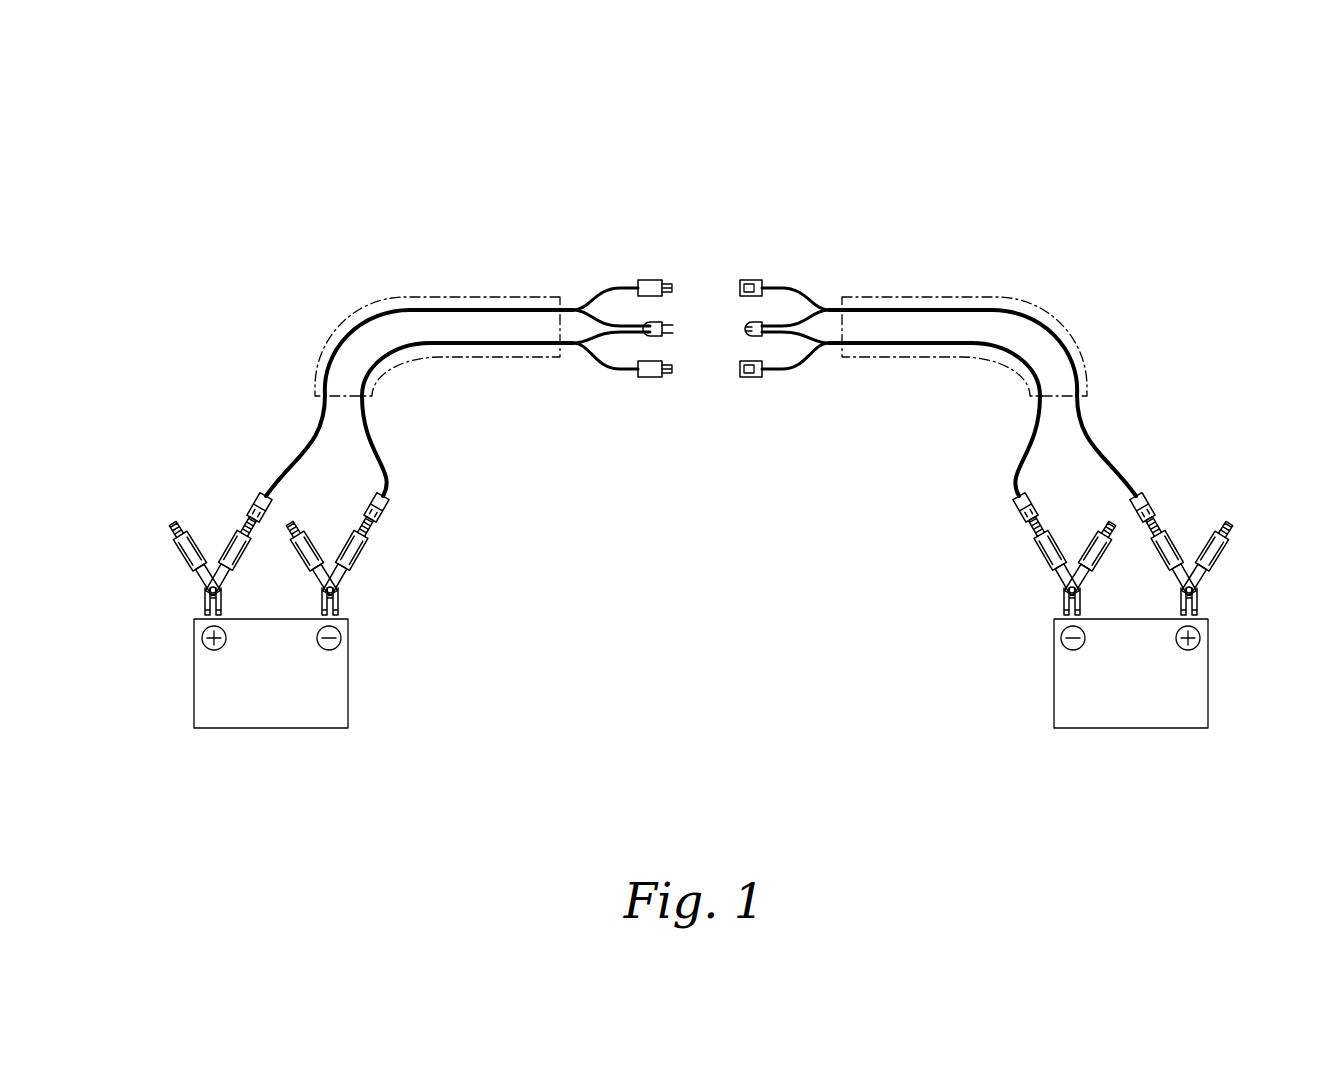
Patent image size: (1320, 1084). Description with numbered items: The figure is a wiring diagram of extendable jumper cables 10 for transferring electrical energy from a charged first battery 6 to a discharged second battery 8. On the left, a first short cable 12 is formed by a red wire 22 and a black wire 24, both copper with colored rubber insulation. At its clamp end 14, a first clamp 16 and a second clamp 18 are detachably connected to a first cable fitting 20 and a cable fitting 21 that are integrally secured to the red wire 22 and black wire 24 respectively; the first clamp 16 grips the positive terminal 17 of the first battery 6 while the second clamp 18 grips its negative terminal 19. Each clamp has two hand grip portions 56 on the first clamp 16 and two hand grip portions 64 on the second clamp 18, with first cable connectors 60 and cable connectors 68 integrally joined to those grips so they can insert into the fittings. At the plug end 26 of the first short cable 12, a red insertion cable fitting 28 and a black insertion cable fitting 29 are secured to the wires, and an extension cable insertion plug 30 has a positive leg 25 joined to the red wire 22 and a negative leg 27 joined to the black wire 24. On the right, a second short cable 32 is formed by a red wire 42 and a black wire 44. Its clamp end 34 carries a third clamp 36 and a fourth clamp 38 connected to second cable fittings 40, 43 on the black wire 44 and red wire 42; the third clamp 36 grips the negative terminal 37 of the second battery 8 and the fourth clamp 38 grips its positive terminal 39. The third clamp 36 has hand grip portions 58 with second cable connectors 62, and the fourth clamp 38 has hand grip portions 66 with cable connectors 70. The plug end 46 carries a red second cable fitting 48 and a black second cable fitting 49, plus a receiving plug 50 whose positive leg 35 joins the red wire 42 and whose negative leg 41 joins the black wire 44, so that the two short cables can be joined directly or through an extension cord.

The first battery 6 is at (273, 705).
The second battery 8 is at (1130, 700).
The extendable jumper cables 10 is at (443, 232).
The first short cable 12 is at (384, 296).
The clamp end 14 is at (248, 412).
The first clamp 16 is at (205, 596).
The positive terminal 17 is at (207, 648).
The second clamp 18 is at (345, 596).
The negative terminal 19 is at (335, 649).
The first cable fitting 20 is at (250, 500).
The cable fitting 21 is at (395, 510).
The red wire 22 is at (340, 345).
The black wire 24 is at (418, 346).
The positive leg 25 is at (600, 318).
The plug end 26 is at (635, 175).
The negative leg 27 is at (598, 340).
The red insertion cable fitting 28 is at (650, 280).
The black insertion cable fitting 29 is at (648, 378).
The extension cable insertion plug 30 is at (673, 333).
The second short cable 32 is at (1040, 297).
The clamp end 34 is at (1162, 403).
The positive leg 35 is at (805, 318).
The third clamp 36 is at (1062, 596).
The negative terminal 37 is at (1067, 650).
The fourth clamp 38 is at (1200, 596).
The positive terminal 39 is at (1195, 650).
The second cable fitting 40 is at (1010, 512).
The negative leg 41 is at (806, 340).
The red wire 42 is at (882, 309).
The second cable fitting 43 is at (1148, 500).
The black wire 44 is at (985, 347).
The plug end 46 is at (770, 175).
The red second cable fitting 48 is at (758, 279).
The black second cable fitting 49 is at (760, 378).
The receiving plug 50 is at (746, 322).
The hand grip portions 56 is at (200, 575).
The hand grip portions 58 is at (1050, 562).
The first cable connectors 60 is at (198, 555).
The second cable connectors 62 is at (1100, 530).
The hand grip portions 64 is at (316, 567).
The hand grip portions 66 is at (1165, 567).
The cable connectors 68 is at (300, 540).
The cable connectors 70 is at (1212, 525).